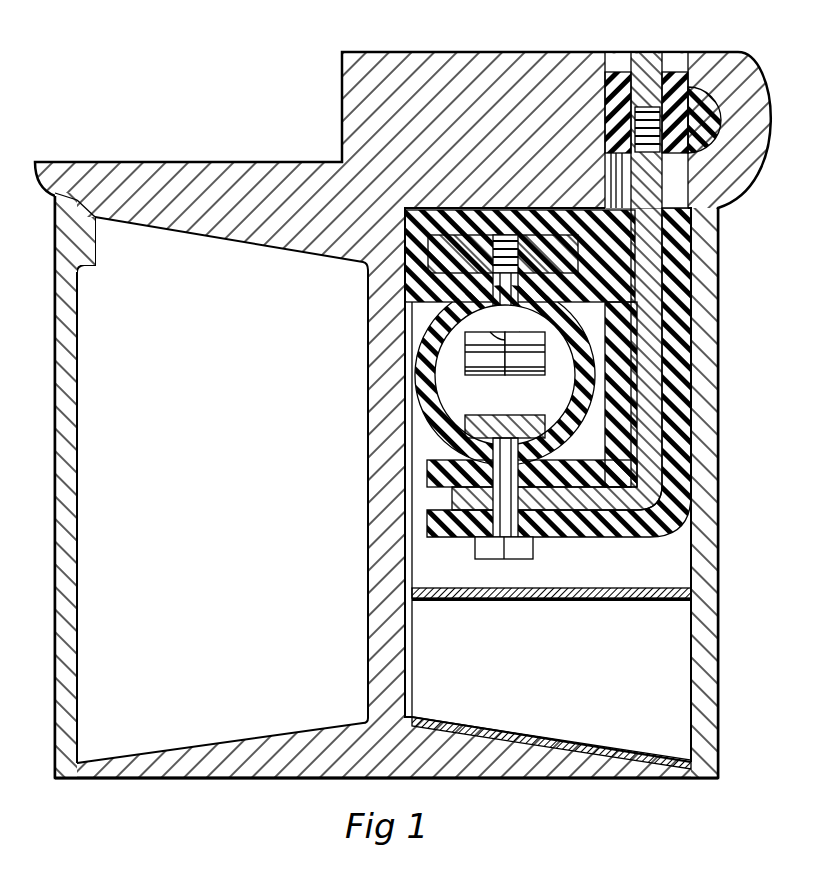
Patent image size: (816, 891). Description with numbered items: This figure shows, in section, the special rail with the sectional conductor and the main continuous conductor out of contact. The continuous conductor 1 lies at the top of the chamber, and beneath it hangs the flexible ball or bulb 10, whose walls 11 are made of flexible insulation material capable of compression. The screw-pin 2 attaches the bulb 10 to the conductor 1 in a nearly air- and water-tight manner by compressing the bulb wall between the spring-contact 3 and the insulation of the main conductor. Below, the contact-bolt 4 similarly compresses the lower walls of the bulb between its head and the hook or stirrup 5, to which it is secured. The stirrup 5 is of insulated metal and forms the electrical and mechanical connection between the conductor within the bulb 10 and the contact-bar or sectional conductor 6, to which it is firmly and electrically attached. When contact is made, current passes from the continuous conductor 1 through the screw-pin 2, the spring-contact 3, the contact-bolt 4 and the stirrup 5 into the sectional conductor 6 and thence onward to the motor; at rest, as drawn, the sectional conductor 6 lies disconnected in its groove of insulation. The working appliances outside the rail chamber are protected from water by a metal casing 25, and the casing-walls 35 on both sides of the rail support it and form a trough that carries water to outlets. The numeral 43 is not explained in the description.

The continuous conductor 1 is at (422, 266).
The screw-pin 2 is at (510, 337).
The spring-contact 3 is at (540, 364).
The contact-bolt 4 is at (527, 417).
The hook or stirrup 5 is at (583, 537).
The sectional conductor 6 is at (662, 60).
The flexible ball or bulb 10 is at (432, 405).
The walls of the ball or bulb 11 is at (505, 375).
The metal casing 25 is at (577, 588).
The casing-wall 35 is at (77, 556).
The lower arm 43 is at (435, 498).